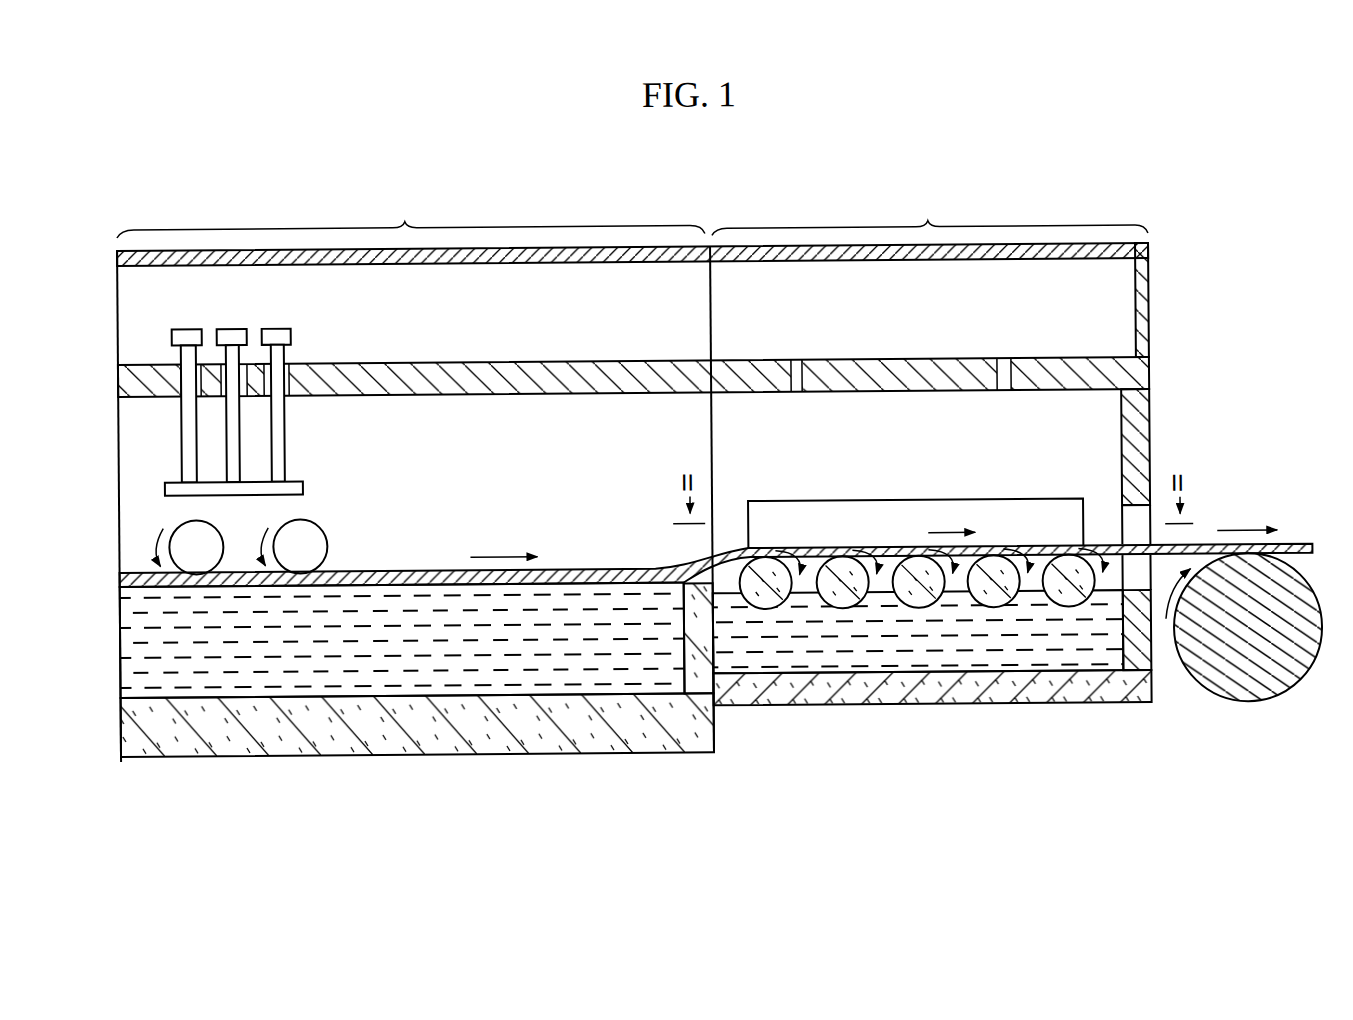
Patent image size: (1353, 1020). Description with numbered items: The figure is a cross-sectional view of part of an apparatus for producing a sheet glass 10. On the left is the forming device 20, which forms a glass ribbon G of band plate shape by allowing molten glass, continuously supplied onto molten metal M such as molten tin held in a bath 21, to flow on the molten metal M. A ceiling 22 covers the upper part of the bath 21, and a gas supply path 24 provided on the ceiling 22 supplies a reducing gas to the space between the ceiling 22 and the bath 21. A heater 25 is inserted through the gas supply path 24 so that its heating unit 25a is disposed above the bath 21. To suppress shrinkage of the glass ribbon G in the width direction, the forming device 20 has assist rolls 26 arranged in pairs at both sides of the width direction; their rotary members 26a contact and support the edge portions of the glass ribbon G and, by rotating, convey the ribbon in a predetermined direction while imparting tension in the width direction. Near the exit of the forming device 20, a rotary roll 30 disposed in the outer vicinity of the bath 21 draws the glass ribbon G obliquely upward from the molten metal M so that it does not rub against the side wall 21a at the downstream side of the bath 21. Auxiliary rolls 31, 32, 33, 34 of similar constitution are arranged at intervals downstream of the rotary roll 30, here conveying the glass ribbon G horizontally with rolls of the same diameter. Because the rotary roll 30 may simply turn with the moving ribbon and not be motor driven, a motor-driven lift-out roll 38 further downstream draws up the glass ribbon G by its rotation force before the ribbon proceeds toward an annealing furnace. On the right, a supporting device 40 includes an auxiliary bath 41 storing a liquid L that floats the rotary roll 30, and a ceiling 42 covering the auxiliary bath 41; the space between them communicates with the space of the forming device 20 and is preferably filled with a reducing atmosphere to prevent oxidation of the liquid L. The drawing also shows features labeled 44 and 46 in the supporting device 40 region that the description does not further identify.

The apparatus for producing a sheet glass 10 is at (126, 213).
The forming device 20 is at (411, 217).
The bath 21 is at (388, 645).
The side wall 21a is at (683, 628).
The ceiling 22 is at (122, 384).
The gas supply path 24 is at (260, 405).
The heater 25 is at (283, 432).
The heating unit 25a is at (296, 483).
The assist roll 26 is at (333, 550).
The rotary member 26a is at (206, 529).
The rotary roll 30 is at (767, 562).
The auxiliary roll 31 is at (844, 562).
The auxiliary roll 32 is at (920, 562).
The auxiliary roll 33 is at (995, 562).
The auxiliary roll 34 is at (1070, 562).
The lift-out roll 38 is at (1302, 681).
The supporting device 40 is at (930, 216).
The auxiliary bath 41 is at (964, 711).
The ceiling 42 is at (904, 365).
The partition opening 44 is at (1007, 365).
The gas supply hood 46 is at (946, 506).
The glass ribbon G is at (122, 581).
The molten metal M is at (140, 655).
The liquid L is at (878, 664).